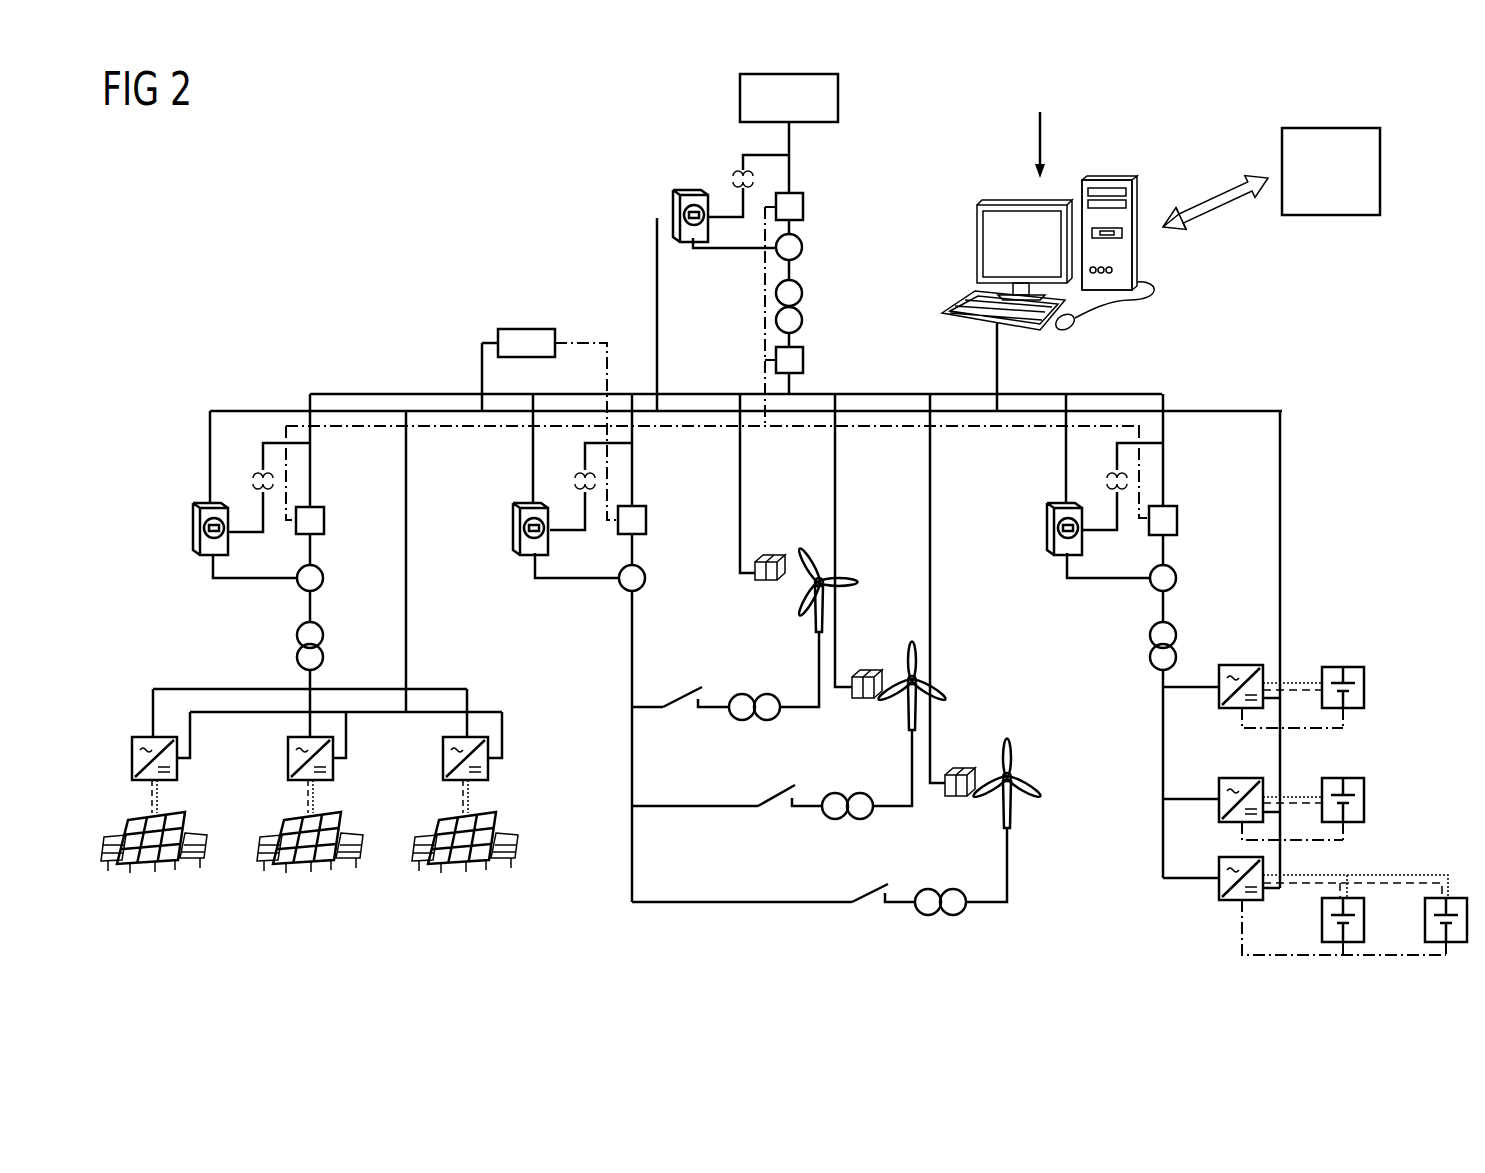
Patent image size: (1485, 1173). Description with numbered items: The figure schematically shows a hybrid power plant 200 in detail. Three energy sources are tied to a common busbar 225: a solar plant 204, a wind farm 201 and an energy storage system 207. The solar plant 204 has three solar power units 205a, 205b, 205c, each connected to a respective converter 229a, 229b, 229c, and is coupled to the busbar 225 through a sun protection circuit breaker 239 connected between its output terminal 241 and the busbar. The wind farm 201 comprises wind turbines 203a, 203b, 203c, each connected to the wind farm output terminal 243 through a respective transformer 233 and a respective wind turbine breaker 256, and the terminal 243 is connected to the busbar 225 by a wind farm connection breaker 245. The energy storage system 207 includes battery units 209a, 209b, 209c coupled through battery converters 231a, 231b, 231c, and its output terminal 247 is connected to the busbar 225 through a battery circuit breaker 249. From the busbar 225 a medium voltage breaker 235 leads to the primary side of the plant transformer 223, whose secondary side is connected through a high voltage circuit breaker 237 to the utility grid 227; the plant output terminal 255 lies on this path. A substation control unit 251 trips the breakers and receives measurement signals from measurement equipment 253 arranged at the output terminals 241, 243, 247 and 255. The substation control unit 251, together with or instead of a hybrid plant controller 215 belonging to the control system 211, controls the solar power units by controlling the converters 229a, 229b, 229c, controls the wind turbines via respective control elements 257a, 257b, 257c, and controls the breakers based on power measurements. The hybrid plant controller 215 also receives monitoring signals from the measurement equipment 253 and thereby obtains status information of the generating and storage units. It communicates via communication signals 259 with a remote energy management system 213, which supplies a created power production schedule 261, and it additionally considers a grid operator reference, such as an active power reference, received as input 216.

The hybrid power plant 200 is at (365, 143).
The wind farm 201 is at (914, 920).
The wind turbine 203a is at (805, 534).
The wind turbine 203b is at (894, 544).
The wind turbine 203c is at (1004, 707).
The solar plant 204 is at (397, 922).
The solar power unit 205a is at (148, 872).
The solar power unit 205b is at (304, 872).
The solar power unit 205c is at (459, 872).
The energy storage system 207 is at (1207, 943).
The battery unit 209a is at (1345, 667).
The battery unit 209b is at (1345, 778).
The battery units 209c is at (1437, 897).
The control system 211 is at (1228, 314).
The remote energy management system 213 is at (1380, 160).
The hybrid plant controller 215 is at (1108, 178).
The grid operator reference input 216 is at (1178, 236).
The plant transformer 223 is at (803, 318).
The common busbar 225 is at (385, 394).
The utility grid 227 is at (838, 96).
The converter 229a is at (177, 770).
The converter 229b is at (333, 770).
The converter 229c is at (443, 760).
The battery converter 231a is at (1238, 665).
The battery converter 231b is at (1240, 778).
The battery converter 231c is at (1217, 890).
The transformer 233 is at (745, 694).
The medium voltage breaker 235 is at (776, 360).
The high voltage circuit breaker 237 is at (796, 193).
The sun protection circuit breaker 239 is at (316, 507).
The output terminal 241 is at (300, 590).
The output terminal 243 is at (620, 590).
The wind farm connection breaker 245 is at (638, 506).
The output terminal 247 is at (1150, 590).
The battery circuit breaker 249 is at (1170, 506).
The substation control unit 251 is at (526, 329).
The measurement equipment 253 is at (673, 212).
The output terminal 255 is at (800, 262).
The wind turbine breaker 256 is at (683, 697).
The control element 257a is at (755, 583).
The control element 257b is at (866, 670).
The control element 257c is at (962, 768).
The communication signals 259 is at (1213, 192).
The power production schedule 261 is at (1037, 178).